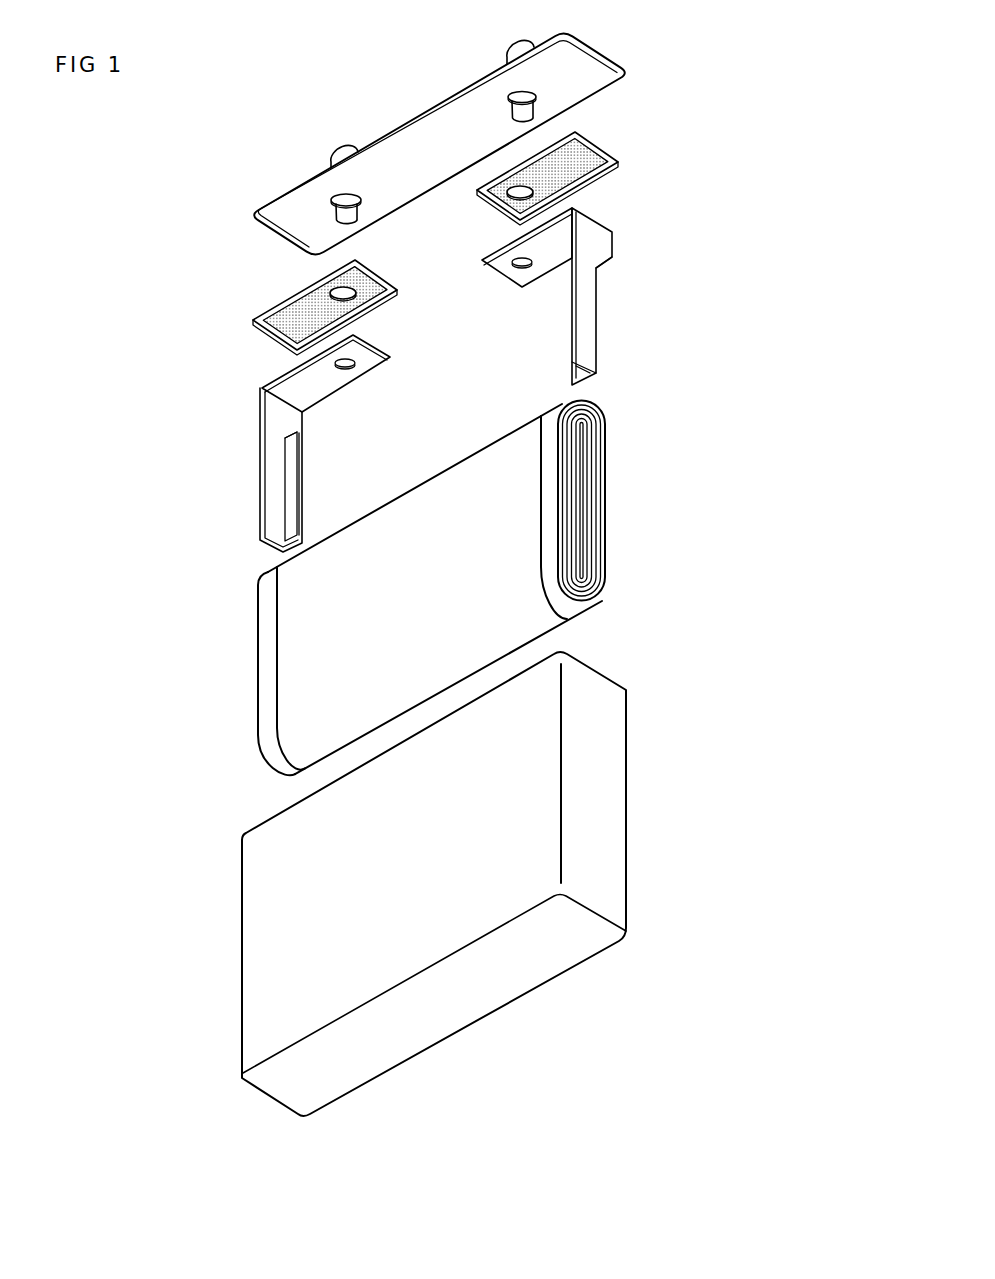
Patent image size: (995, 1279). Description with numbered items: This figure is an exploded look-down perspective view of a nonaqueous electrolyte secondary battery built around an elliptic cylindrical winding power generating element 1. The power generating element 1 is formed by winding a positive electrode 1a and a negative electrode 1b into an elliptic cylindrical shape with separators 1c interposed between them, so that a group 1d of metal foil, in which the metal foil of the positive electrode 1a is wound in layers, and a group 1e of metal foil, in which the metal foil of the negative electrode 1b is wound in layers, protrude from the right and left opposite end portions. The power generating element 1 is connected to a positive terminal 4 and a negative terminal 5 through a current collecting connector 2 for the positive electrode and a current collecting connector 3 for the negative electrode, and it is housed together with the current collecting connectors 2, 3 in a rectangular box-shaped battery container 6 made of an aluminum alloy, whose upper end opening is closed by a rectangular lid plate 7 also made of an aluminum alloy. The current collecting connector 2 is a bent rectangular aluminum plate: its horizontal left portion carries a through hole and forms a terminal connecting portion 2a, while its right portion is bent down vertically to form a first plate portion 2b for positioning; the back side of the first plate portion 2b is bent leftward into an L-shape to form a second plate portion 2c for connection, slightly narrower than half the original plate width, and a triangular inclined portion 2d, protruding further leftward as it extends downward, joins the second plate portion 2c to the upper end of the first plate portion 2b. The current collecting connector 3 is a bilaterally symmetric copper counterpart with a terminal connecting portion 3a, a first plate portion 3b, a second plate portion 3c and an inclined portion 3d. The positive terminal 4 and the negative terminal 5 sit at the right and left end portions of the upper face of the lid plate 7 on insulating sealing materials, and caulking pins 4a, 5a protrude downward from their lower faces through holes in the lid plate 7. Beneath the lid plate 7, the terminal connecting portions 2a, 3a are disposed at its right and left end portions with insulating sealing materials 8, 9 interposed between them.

The power generating element 1 is at (434, 588).
The positive electrode 1a is at (545, 513).
The negative electrode 1b is at (268, 688).
The separators 1c is at (460, 485).
The group of metal foil of the positive electrode 1d is at (615, 507).
The group of metal foil of the negative electrode 1e is at (252, 662).
The current collecting connector for the positive electrode 2 is at (574, 296).
The terminal connecting portion 2a is at (508, 274).
The first plate portion 2b is at (571, 310).
The second plate portion 2c is at (573, 371).
The inclined portion 2d is at (612, 268).
The current collecting connector for the negative electrode 3 is at (297, 443).
The terminal connecting portion 3a is at (357, 372).
The first plate portion 3b is at (272, 486).
The second plate portion 3c is at (292, 488).
The inclined portion 3d is at (298, 432).
The positive terminal 4 is at (507, 53).
The caulking pin 4a is at (520, 119).
The negative terminal 5 is at (336, 148).
The caulking pin 5a is at (342, 223).
The battery container 6 is at (278, 916).
The lid plate 7 is at (426, 133).
The insulating sealing material 8 is at (607, 182).
The insulating sealing material 9 is at (271, 307).